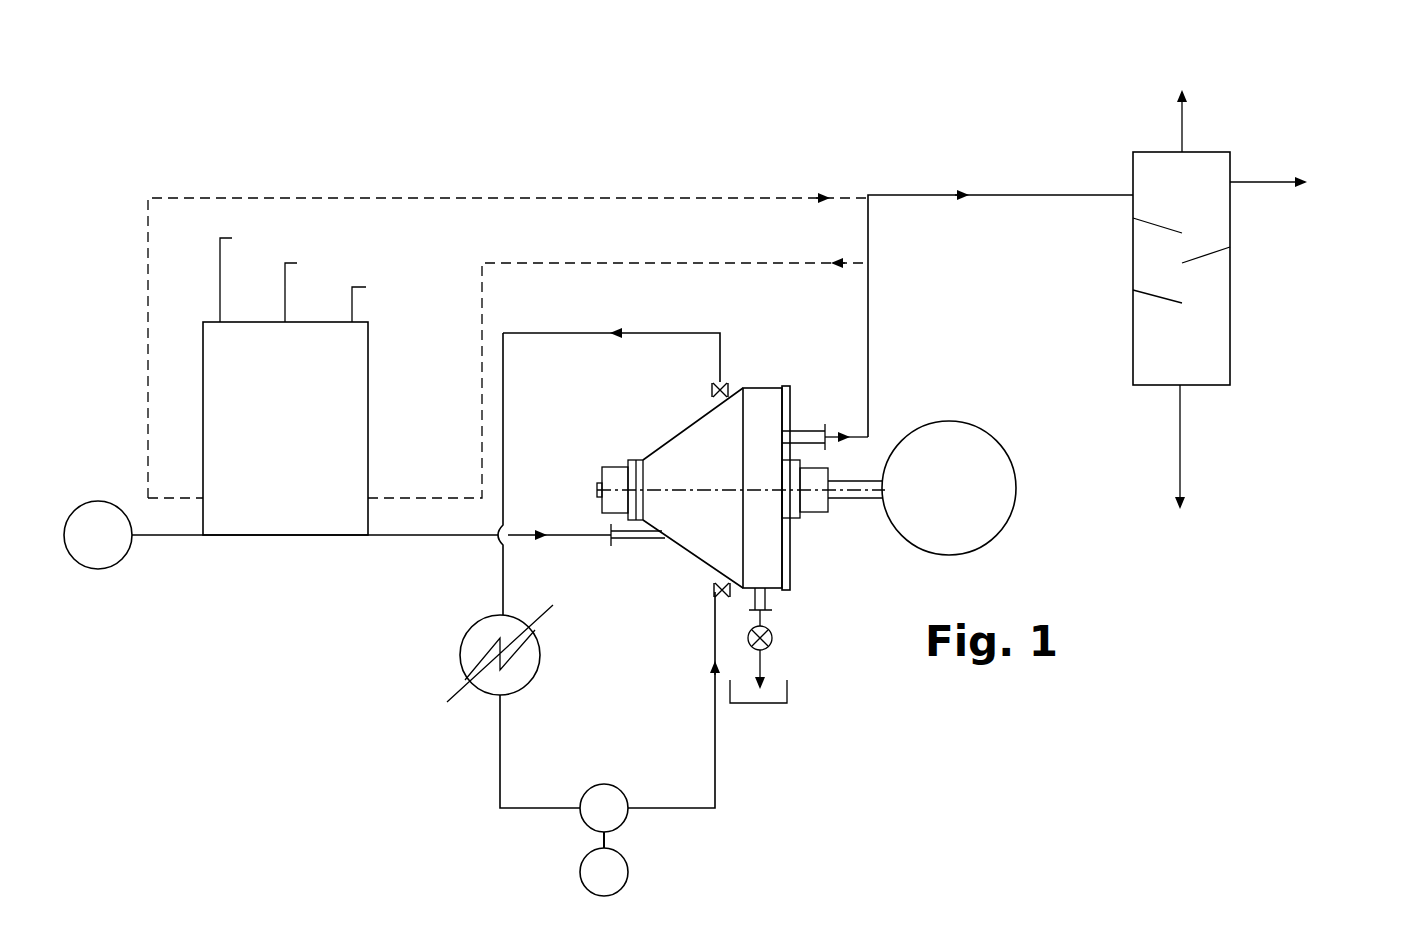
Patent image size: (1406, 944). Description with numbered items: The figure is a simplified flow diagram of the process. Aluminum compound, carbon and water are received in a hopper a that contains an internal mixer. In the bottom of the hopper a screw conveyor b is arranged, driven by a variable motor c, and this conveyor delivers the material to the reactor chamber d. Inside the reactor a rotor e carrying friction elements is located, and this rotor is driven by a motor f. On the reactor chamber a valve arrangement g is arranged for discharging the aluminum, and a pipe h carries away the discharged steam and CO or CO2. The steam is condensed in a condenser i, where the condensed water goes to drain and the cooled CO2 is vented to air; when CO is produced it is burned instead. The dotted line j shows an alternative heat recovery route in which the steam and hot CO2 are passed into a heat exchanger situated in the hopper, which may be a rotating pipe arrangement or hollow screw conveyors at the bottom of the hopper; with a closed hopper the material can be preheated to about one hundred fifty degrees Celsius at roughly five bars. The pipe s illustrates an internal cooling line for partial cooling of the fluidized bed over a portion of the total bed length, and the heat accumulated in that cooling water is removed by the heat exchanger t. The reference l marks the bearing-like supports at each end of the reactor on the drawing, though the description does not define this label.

The hopper a is at (368, 374).
The screw conveyor b is at (405, 537).
The variable motor c is at (97, 569).
The reactor chamber d is at (683, 548).
The rotor e is at (840, 481).
The motor f is at (1010, 518).
The valve arrangement g is at (773, 636).
The pipe h is at (868, 319).
The condenser i is at (1230, 355).
The dotted line j is at (598, 196).
The bearing l is at (610, 463).
The pipe s is at (728, 386).
The heat exchanger t is at (462, 652).